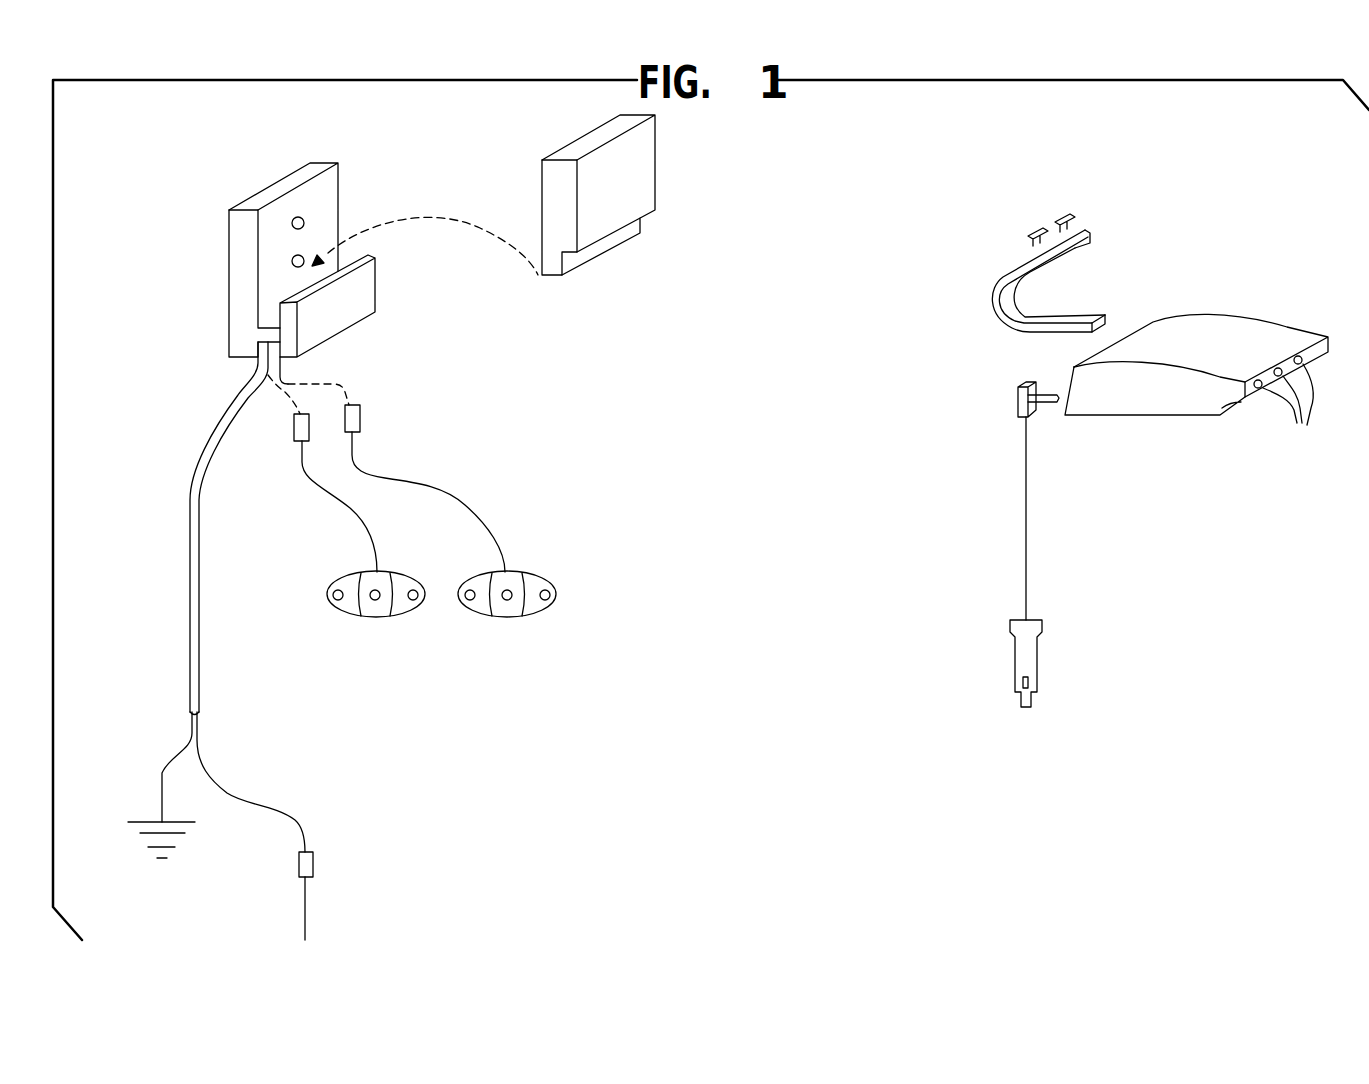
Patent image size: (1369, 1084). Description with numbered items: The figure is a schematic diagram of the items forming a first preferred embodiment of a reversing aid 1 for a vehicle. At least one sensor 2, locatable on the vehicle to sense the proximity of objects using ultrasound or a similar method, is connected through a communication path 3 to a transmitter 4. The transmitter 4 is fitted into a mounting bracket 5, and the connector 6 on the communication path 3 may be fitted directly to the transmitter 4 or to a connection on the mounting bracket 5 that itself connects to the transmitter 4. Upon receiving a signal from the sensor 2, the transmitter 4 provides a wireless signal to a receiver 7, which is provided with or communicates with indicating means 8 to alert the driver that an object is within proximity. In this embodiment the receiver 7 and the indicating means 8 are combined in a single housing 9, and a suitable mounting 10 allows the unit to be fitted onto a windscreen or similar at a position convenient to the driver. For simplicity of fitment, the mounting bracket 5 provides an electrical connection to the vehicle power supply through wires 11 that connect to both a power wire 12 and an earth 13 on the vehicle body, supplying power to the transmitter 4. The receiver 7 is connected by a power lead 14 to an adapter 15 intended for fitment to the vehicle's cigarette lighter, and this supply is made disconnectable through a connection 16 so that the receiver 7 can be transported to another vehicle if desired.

The reversing aid 1 is at (1138, 184).
The sensor 2 is at (550, 596).
The communication path 3 is at (462, 500).
The transmitter 4 is at (641, 177).
The mounting bracket 5 is at (332, 196).
The connector 6 is at (356, 415).
The receiver 7 is at (1158, 402).
The indicating means 8 is at (1288, 410).
The housing 9 is at (1238, 306).
The mounting 10 is at (1000, 305).
The wires 11 is at (199, 609).
The power wire 12 is at (267, 807).
The earth 13 is at (160, 800).
The power lead 14 is at (1026, 558).
The adapter 15 is at (1022, 667).
The connection 16 is at (1017, 397).